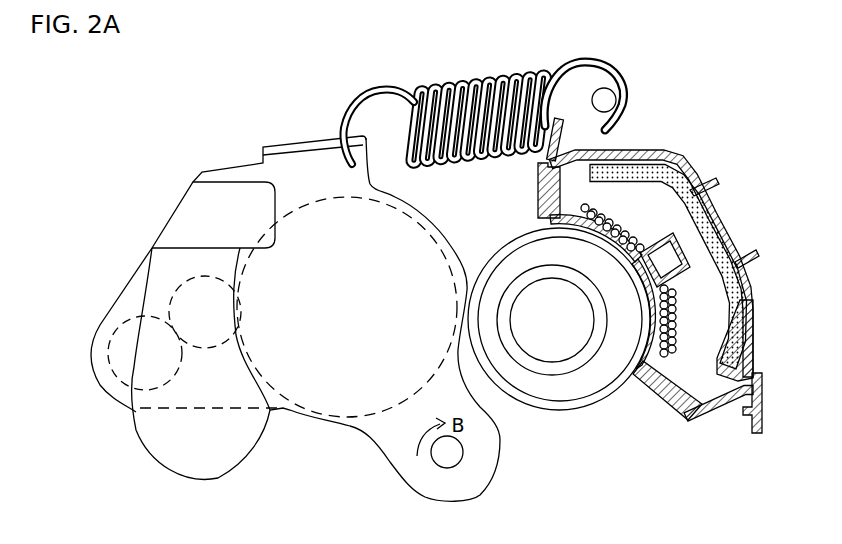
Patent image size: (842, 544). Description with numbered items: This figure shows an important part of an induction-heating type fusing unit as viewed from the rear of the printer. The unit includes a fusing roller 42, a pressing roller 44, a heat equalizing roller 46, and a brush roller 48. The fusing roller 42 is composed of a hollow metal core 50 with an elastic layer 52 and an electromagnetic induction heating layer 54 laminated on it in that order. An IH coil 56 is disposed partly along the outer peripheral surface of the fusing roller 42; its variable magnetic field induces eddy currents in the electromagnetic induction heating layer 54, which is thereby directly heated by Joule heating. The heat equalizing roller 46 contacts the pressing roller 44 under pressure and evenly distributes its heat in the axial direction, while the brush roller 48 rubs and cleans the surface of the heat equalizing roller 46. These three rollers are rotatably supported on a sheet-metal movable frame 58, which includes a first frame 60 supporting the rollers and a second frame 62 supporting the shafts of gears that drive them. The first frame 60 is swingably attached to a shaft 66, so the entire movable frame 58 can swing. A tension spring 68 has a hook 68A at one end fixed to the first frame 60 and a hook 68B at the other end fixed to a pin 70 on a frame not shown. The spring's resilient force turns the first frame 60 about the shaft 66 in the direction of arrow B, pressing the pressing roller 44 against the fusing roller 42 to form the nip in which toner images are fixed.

The fusing roller 42 is at (585, 351).
The pressing roller 44 is at (286, 412).
The heat equalizing roller 46 is at (181, 293).
The brush roller 48 is at (113, 373).
The metal core 50 is at (545, 372).
The elastic layer 52 is at (573, 385).
The electromagnetic induction heating layer 54 is at (610, 388).
The IH coil 56 is at (630, 217).
The movable frame 58 is at (240, 99).
The first frame 60 is at (243, 165).
The second frame 62 is at (217, 181).
The shaft 66 is at (450, 466).
The tension spring 68 is at (459, 78).
The hook 68A is at (371, 86).
The hook 68B is at (605, 57).
The pin 70 is at (608, 99).